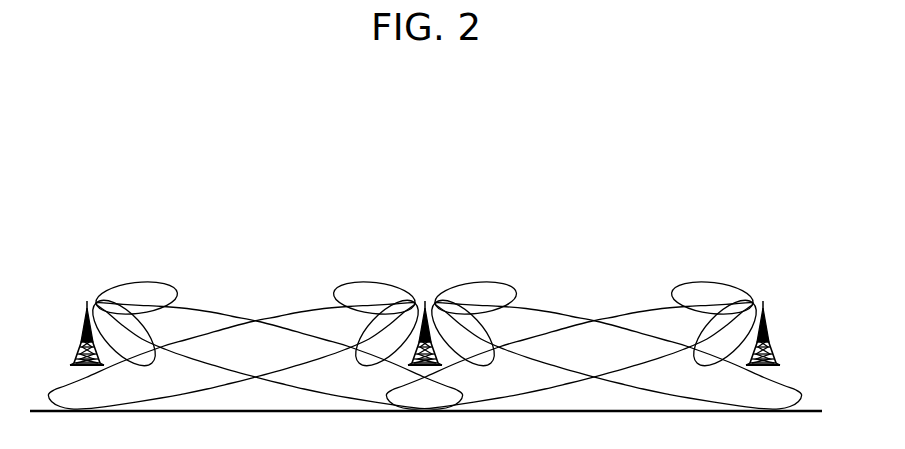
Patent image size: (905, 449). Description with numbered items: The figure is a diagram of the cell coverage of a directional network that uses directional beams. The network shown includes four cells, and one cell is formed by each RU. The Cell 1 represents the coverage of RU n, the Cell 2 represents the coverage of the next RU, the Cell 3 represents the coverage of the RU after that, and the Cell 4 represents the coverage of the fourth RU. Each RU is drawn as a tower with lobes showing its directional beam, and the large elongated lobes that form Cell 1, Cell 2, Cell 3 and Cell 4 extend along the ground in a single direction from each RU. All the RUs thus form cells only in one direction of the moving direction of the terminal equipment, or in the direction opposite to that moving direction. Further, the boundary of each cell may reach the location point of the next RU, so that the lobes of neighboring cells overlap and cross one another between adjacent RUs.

The remote unit RU n is at (124, 316).
The cell Cell 1 is at (279, 355).
The cell Cell 2 is at (231, 355).
The cell Cell 3 is at (618, 355).
The cell Cell 4 is at (569, 355).